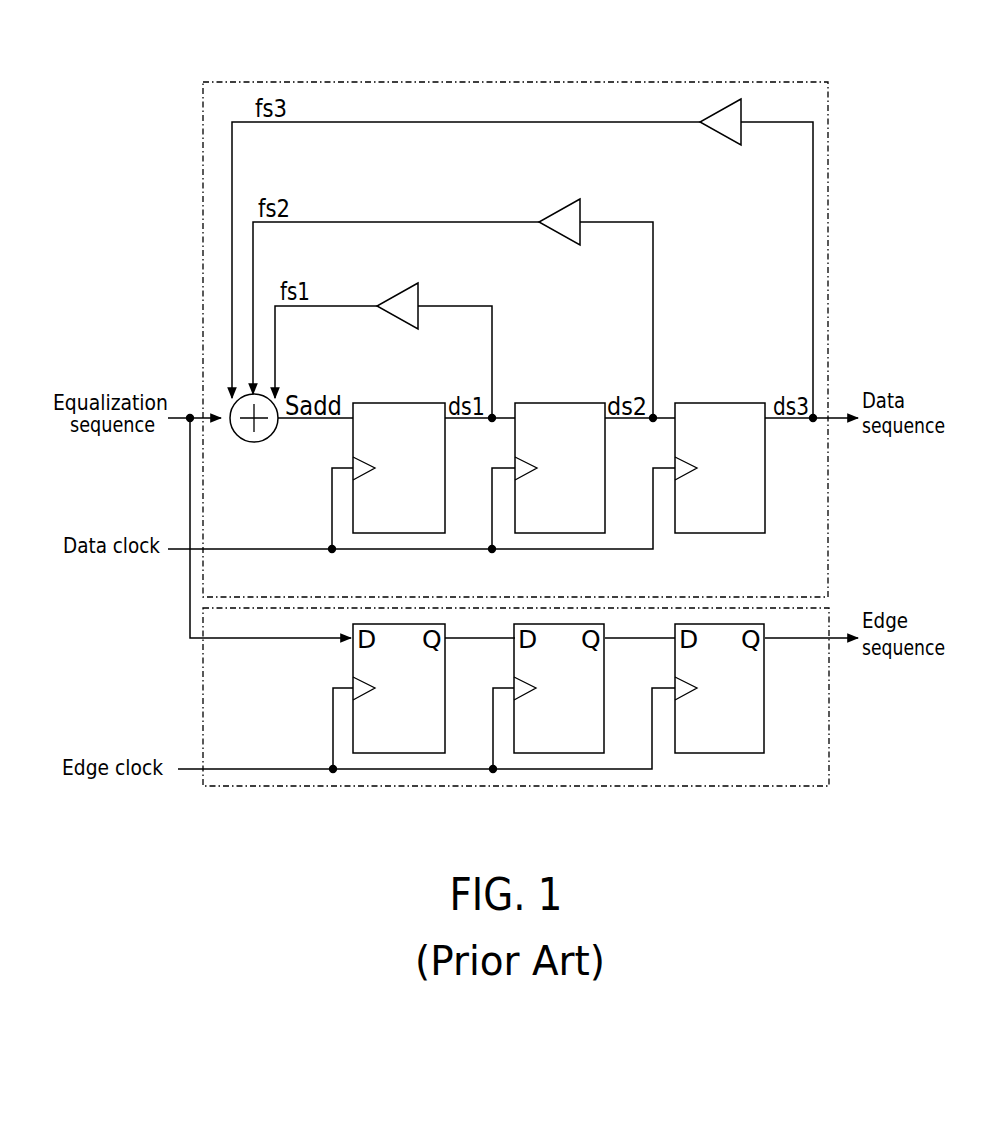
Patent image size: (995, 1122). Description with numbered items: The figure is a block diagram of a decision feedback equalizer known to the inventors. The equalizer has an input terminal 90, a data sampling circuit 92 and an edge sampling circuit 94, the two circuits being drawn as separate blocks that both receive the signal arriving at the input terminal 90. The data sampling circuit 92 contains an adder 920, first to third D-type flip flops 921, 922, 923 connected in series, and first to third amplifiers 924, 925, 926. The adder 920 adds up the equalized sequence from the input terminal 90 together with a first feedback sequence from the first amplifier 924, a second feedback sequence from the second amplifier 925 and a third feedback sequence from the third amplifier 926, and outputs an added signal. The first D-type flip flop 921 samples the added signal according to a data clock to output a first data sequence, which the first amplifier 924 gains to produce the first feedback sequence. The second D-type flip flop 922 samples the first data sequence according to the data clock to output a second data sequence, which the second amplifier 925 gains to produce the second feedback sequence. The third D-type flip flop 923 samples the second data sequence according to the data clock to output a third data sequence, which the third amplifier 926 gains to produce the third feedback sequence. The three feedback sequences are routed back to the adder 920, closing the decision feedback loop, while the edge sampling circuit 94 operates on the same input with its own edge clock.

The input terminal 90 is at (187, 412).
The data sampling circuit 92 is at (529, 82).
The edge sampling circuit 94 is at (513, 788).
The adder 920 is at (237, 436).
The first D-type flip flop 921 is at (400, 533).
The second D-type flip flop 922 is at (560, 533).
The third D-type flip flop 923 is at (720, 533).
The first amplifier 924 is at (393, 291).
The second amplifier 925 is at (552, 210).
The third amplifier 926 is at (711, 105).